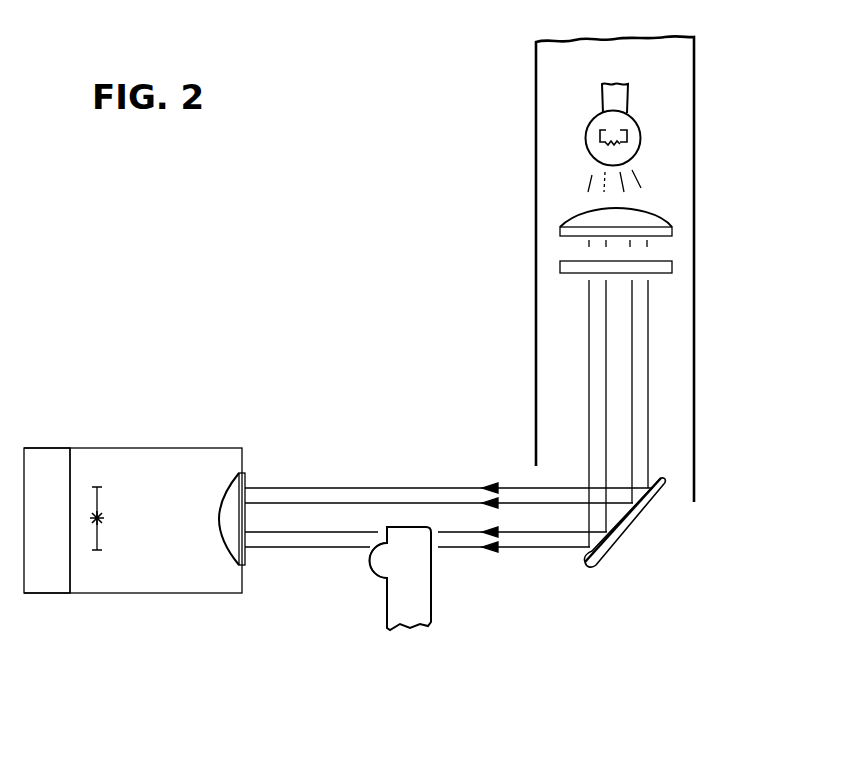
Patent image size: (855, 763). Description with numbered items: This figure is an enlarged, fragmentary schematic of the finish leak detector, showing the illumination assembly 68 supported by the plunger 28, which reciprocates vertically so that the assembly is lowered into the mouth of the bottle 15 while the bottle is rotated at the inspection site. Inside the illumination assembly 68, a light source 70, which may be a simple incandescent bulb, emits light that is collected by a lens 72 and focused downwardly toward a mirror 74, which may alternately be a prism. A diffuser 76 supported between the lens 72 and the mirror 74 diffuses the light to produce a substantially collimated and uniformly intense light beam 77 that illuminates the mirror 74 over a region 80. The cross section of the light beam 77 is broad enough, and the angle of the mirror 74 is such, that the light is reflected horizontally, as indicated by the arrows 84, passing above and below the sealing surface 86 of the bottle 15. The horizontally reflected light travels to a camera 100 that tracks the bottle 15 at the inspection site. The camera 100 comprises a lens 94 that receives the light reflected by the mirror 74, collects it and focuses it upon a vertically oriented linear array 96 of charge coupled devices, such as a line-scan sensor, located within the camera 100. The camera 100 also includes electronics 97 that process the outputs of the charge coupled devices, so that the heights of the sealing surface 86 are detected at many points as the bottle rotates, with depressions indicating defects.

The plunger 28 is at (557, 40).
The illumination assembly 68 is at (557, 133).
The light source 70 is at (641, 125).
The lens 72 is at (655, 217).
The diffuser 76 is at (560, 262).
The light beam 77 is at (590, 470).
The region 80 is at (625, 522).
The mirror 74 is at (585, 556).
The arrows 84 is at (526, 549).
The sealing surface 86 is at (397, 526).
The bottle 15 is at (373, 612).
The lens 94 is at (246, 478).
The linear array 96 is at (98, 486).
The electronics 97 is at (50, 447).
The camera 100 is at (170, 358).